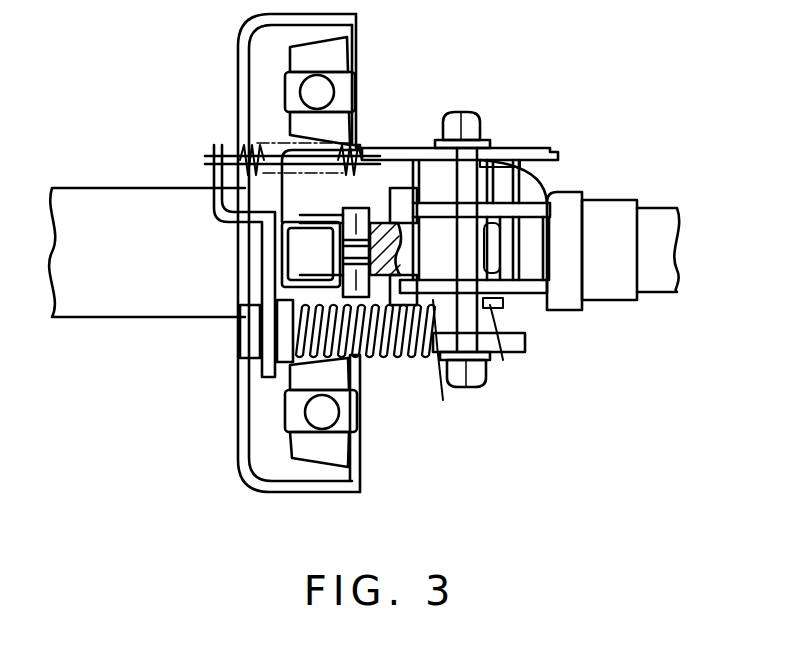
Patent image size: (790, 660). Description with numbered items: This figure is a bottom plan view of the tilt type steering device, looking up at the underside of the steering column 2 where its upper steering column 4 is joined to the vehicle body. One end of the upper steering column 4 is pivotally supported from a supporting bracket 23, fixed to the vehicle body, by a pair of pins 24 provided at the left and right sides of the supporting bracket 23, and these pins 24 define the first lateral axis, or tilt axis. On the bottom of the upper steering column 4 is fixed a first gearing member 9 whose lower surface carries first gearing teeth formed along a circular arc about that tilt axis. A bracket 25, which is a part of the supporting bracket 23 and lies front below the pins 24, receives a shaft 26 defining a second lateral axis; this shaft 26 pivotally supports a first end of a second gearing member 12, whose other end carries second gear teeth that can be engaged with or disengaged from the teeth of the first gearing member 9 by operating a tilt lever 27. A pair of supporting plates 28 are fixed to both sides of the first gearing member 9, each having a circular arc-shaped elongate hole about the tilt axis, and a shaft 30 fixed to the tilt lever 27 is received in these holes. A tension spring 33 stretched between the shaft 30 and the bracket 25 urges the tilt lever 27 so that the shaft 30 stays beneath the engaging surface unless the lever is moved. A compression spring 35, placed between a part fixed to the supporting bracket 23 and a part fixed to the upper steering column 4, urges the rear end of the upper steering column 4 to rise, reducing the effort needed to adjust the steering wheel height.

The steering column 2 is at (137, 205).
The upper steering column 4 is at (530, 193).
The first gearing member 9 is at (512, 355).
The second gearing member 12 is at (445, 280).
The supporting bracket 23 is at (470, 377).
The pins 24 is at (457, 113).
The bracket 25 is at (290, 282).
The shaft 26 is at (347, 208).
The tilt lever 27 is at (540, 148).
The supporting plates 28 is at (540, 208).
The shaft 30 is at (468, 187).
The tension spring 33 is at (357, 157).
The compression spring 35 is at (372, 350).